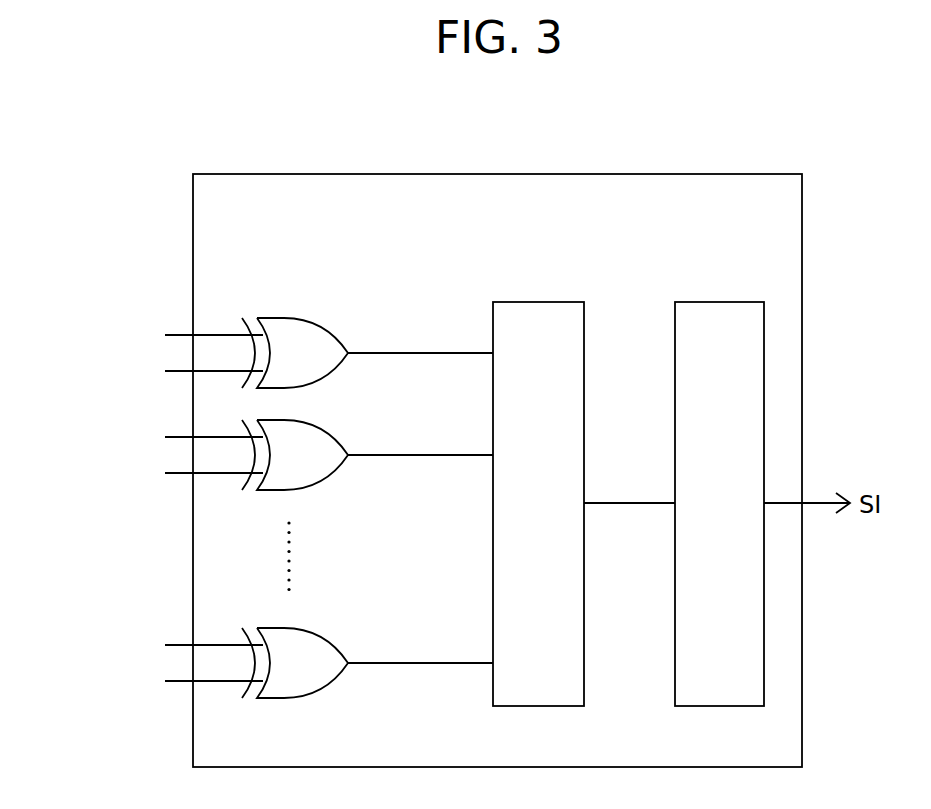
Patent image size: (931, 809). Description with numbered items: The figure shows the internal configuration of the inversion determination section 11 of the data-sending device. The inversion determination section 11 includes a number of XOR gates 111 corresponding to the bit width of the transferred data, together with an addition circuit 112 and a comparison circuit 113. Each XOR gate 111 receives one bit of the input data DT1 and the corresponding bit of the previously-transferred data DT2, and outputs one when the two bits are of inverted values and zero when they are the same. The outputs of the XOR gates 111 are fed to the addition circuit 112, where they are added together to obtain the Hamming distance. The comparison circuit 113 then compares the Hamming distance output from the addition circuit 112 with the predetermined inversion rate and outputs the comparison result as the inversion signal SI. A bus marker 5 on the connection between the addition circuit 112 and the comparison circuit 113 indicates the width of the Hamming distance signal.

The inversion determination section 11 is at (402, 174).
The XOR gates 111 is at (367, 308).
The addition circuit 112 is at (538, 302).
The comparison circuit 113 is at (714, 302).
The bus width 5 is at (632, 494).